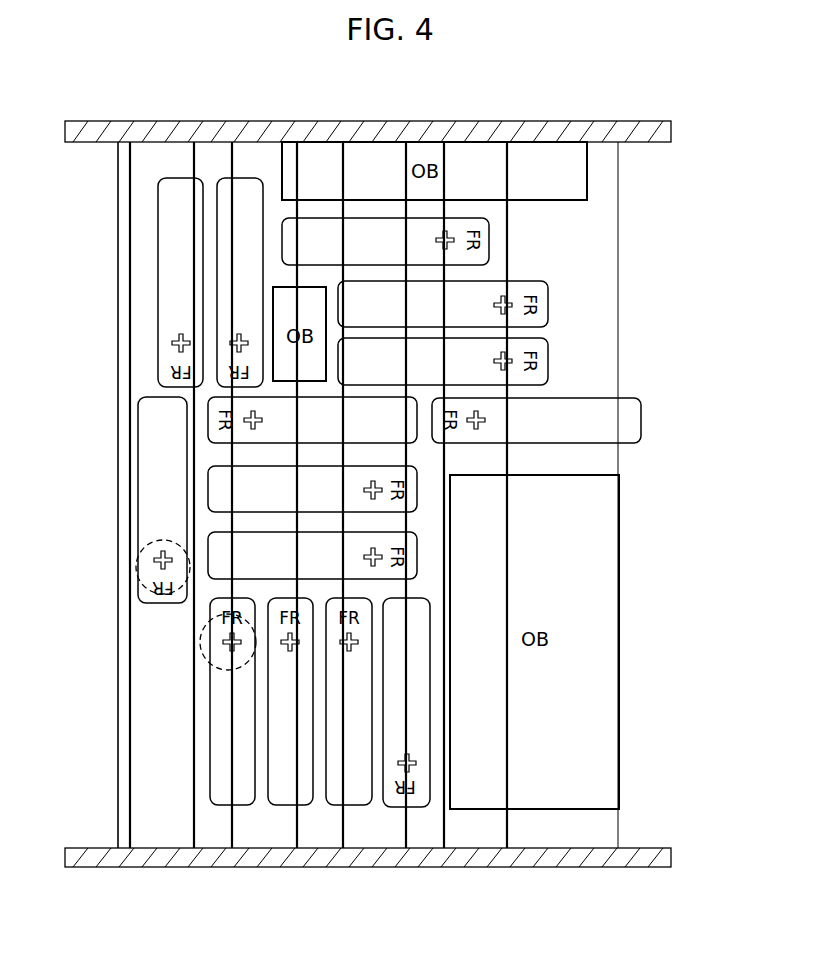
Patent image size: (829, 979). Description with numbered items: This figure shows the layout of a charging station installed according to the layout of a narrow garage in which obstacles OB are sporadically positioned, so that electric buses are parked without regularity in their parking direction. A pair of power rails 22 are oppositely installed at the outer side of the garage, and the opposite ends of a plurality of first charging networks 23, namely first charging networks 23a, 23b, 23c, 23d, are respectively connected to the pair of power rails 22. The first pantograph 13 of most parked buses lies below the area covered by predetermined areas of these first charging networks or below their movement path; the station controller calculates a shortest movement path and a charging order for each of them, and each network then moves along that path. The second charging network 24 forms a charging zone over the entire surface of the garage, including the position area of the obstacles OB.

The first pantograph 13 is at (202, 642).
The power rail 22 is at (646, 145).
The first charging network 23 is at (318, 549).
The first charging network 23a is at (162, 835).
The first charging network 23b is at (264, 835).
The first charging network 23c is at (374, 835).
The first charging network 23d is at (475, 530).
The second charging network 24 is at (594, 275).